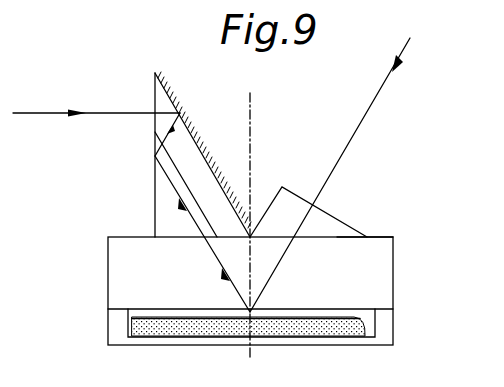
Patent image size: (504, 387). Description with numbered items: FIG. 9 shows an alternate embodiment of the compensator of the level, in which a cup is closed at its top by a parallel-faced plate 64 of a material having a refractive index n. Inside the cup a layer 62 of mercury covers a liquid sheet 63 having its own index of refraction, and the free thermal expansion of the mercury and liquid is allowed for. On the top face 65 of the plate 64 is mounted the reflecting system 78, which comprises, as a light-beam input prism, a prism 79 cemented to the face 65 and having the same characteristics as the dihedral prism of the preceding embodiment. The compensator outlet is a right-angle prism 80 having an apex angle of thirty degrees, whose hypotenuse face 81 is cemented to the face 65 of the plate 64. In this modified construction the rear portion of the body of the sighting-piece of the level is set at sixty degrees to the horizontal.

The layer of mercury 62 is at (292, 325).
The liquid sheet 63 is at (358, 322).
The parallel-faced plate 64 is at (380, 265).
The top face of plate 65 is at (385, 236).
The reflecting system 78 is at (398, 188).
The light-beam input prism 79 is at (203, 143).
The right-angle prism 80 is at (293, 199).
The hypotenuse face 81 is at (338, 236).